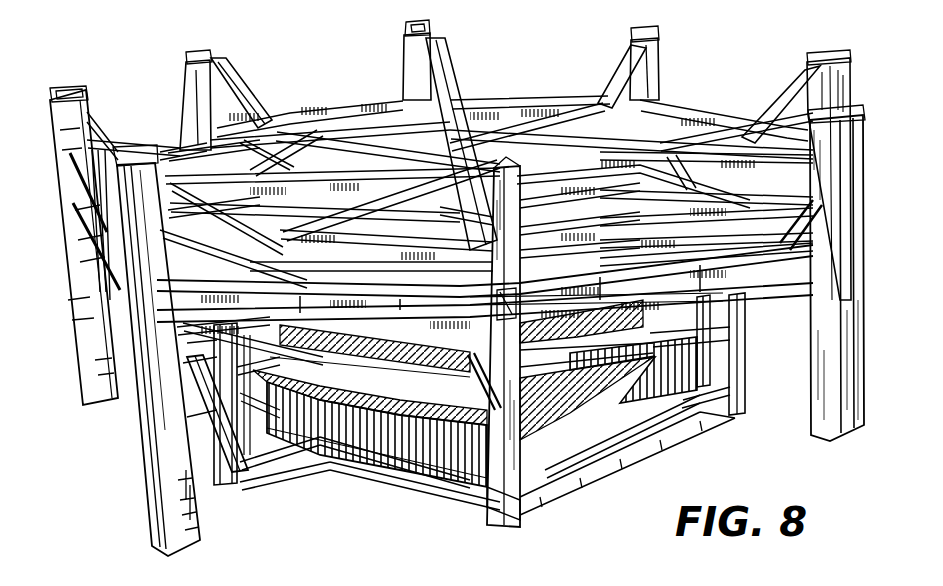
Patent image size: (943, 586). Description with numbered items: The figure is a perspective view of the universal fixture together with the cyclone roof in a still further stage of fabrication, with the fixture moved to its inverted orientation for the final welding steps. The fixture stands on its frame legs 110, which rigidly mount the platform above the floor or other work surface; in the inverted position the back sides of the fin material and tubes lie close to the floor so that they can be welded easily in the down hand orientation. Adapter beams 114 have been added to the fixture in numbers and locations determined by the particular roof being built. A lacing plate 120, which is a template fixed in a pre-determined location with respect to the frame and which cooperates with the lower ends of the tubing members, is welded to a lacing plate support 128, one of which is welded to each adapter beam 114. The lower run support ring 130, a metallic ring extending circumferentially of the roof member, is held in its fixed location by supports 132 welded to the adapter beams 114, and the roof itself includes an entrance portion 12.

The entrance portion 12 is at (556, 453).
The frame legs 110 is at (185, 77).
The adapter beams 114 is at (237, 483).
The lacing plate 120 is at (343, 457).
The lacing plate support 128 is at (267, 470).
The lower run support ring 130 is at (417, 467).
The supports 132 is at (338, 410).